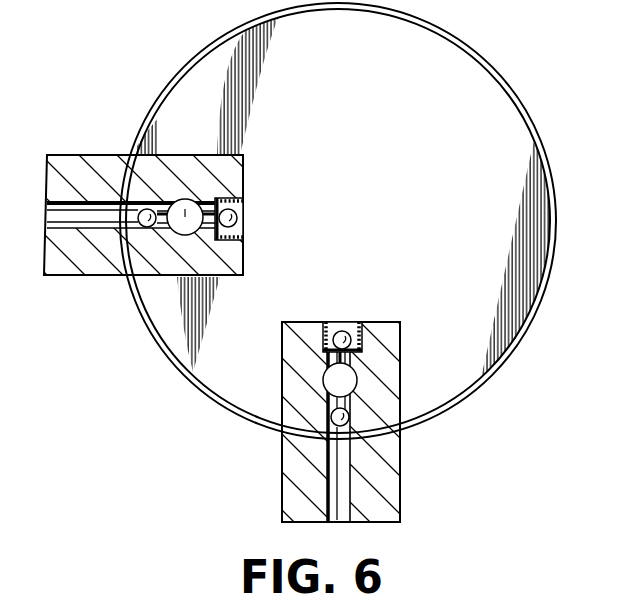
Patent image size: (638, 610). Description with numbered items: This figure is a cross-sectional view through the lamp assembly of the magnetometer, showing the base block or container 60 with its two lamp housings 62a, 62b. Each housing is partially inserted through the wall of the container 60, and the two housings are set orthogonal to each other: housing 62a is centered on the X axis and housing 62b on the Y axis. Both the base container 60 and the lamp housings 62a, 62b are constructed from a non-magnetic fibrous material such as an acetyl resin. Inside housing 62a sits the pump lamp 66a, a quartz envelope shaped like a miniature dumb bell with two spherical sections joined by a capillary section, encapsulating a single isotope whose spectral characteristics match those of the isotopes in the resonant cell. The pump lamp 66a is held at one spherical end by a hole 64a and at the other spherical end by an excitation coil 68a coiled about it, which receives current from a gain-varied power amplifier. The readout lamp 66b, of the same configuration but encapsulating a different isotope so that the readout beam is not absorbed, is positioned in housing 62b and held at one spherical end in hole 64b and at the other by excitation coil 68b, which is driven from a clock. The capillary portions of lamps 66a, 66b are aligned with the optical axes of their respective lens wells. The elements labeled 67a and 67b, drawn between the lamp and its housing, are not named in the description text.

The base block 60 is at (467, 100).
The lamp housing 62a is at (82, 168).
The lamp housing 62b is at (383, 493).
The hole 64a is at (80, 223).
The hole 64b is at (340, 447).
The pump lamp 66a is at (200, 203).
The readout lamp 66b is at (357, 378).
The first push rod and ball 67a is at (187, 201).
The second push rod and ball 67b is at (330, 376).
The excitation coil 68a is at (244, 233).
The excitation coil 68b is at (362, 328).